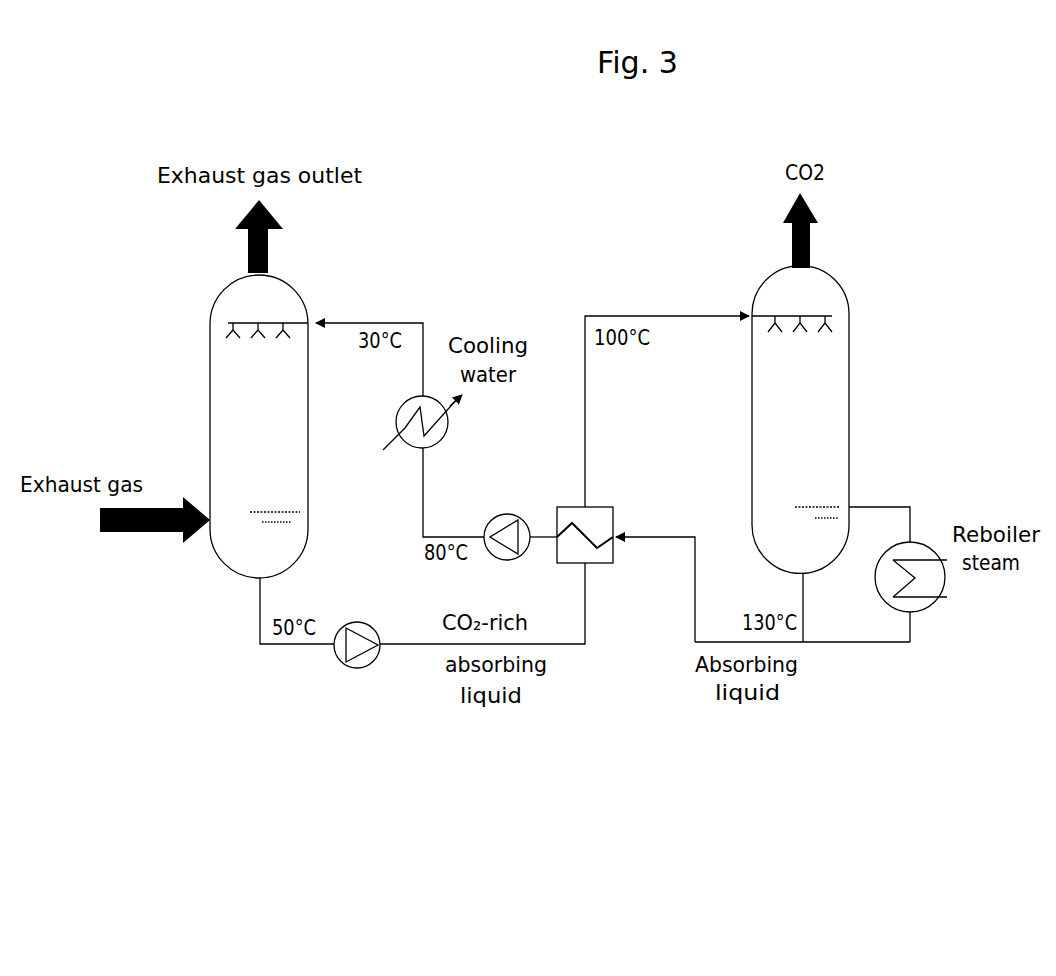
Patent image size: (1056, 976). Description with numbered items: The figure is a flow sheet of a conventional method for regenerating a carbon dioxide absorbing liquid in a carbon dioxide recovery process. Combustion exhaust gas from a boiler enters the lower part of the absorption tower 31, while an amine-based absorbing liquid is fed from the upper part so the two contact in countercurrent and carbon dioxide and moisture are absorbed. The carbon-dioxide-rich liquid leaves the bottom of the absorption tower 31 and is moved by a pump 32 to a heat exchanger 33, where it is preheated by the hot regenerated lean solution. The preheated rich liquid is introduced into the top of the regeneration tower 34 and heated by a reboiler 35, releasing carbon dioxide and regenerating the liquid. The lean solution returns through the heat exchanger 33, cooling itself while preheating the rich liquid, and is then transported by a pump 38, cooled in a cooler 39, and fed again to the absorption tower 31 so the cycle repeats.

The absorption tower 31 is at (222, 563).
The pump 32 is at (357, 667).
The heat exchanger 33 is at (605, 506).
The regeneration tower 34 is at (845, 290).
The reboiler 35 is at (925, 607).
The pump 38 is at (506, 514).
The cooler 39 is at (396, 412).